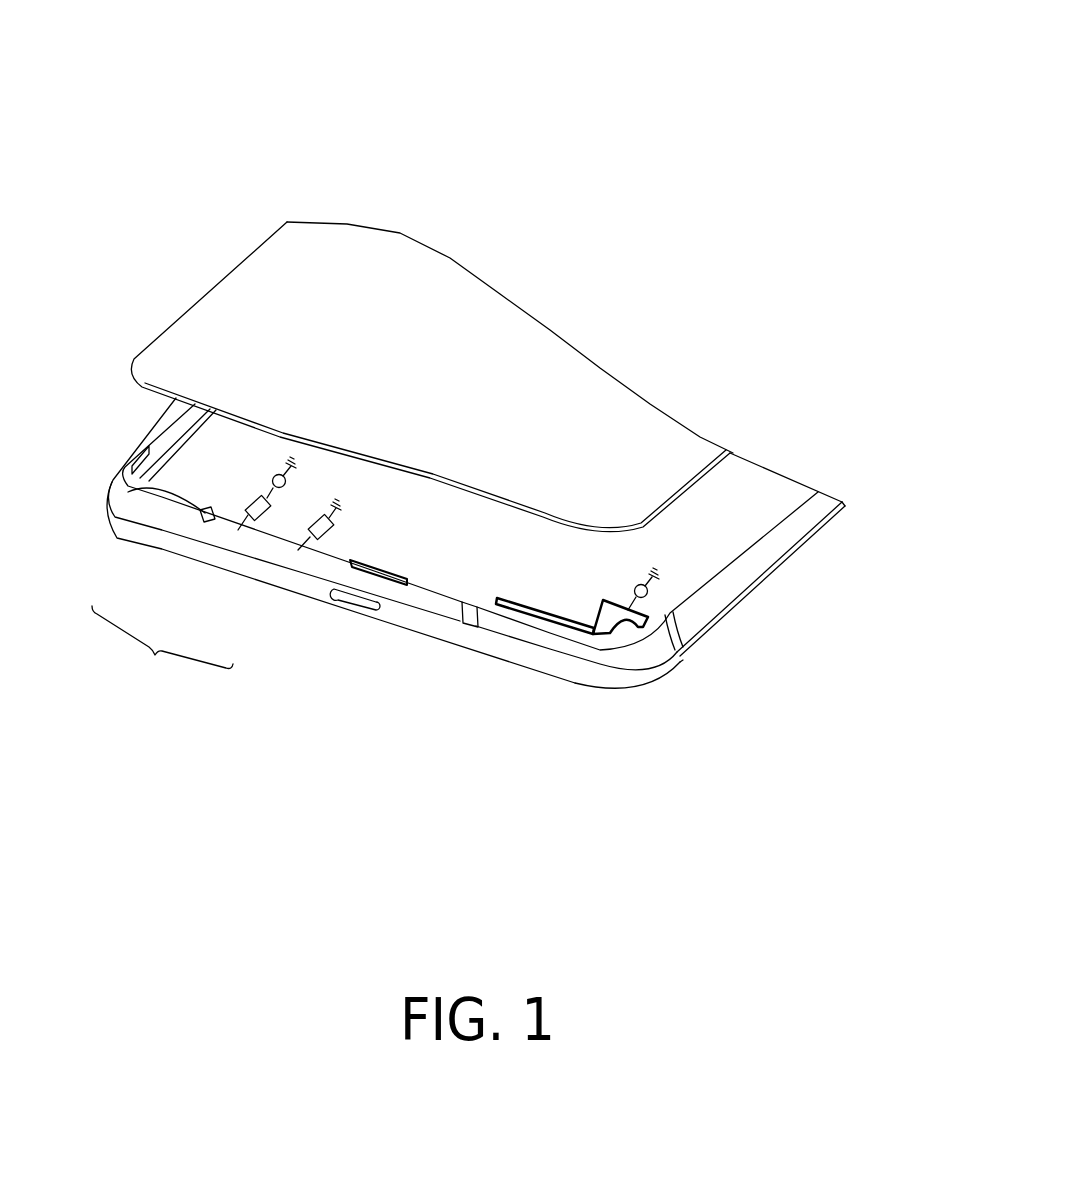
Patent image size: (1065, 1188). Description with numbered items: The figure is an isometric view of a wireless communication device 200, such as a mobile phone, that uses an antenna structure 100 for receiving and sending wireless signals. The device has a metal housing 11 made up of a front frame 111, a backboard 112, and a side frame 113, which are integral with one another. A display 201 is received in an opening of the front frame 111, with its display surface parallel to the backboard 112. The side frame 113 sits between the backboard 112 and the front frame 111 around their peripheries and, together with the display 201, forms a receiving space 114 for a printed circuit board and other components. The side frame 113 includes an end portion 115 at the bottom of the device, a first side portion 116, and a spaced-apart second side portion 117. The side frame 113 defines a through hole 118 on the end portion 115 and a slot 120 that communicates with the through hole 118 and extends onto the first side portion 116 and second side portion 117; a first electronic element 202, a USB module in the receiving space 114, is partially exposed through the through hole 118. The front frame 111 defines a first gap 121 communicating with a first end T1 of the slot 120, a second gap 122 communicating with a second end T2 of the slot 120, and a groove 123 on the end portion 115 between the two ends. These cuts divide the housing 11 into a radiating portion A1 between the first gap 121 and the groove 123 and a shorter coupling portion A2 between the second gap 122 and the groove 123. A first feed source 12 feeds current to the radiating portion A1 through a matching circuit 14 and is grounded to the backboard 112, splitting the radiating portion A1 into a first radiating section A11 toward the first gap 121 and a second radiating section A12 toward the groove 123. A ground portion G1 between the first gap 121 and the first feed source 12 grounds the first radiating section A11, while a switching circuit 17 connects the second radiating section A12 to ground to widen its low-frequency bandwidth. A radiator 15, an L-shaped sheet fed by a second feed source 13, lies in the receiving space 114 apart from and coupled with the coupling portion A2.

The antenna structure 100 is at (826, 555).
The wireless communication device 200 is at (461, 63).
The display 201 is at (410, 253).
The first electronic element 202 is at (383, 572).
The housing 11 is at (953, 492).
The front frame 111 is at (807, 497).
The backboard 112 is at (823, 520).
The side frame 113 is at (827, 502).
The receiving space 114 is at (748, 468).
The end portion 115 is at (410, 617).
The first side portion 116 is at (187, 430).
The second side portion 117 is at (750, 568).
The through hole 118 is at (362, 605).
The slot 120 is at (615, 668).
The first gap 121 is at (133, 455).
The second gap 122 is at (675, 645).
The groove 123 is at (469, 615).
The first feed source 12 is at (278, 474).
The second feed source 13 is at (648, 590).
The matching circuit 14 is at (270, 520).
The radiator 15 is at (583, 662).
The switching circuit 17 is at (330, 540).
The first end T1 is at (178, 438).
The second end T2 is at (675, 633).
The ground portion G1 is at (128, 492).
The radiating portion A1 is at (162, 650).
The first radiating section A11 is at (177, 518).
The second radiating section A12 is at (292, 530).
The coupling portion A2 is at (625, 648).